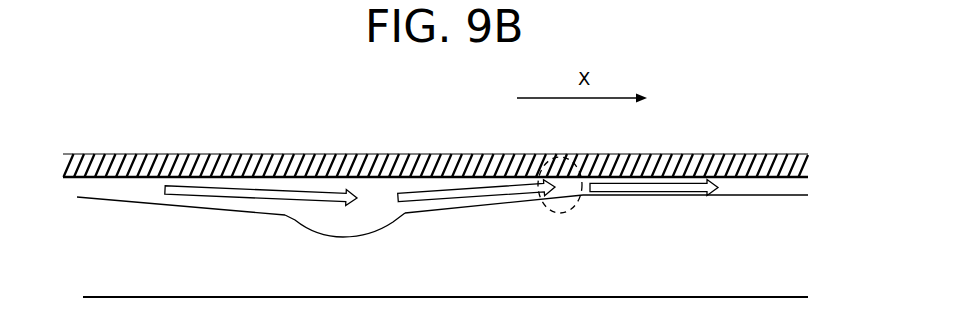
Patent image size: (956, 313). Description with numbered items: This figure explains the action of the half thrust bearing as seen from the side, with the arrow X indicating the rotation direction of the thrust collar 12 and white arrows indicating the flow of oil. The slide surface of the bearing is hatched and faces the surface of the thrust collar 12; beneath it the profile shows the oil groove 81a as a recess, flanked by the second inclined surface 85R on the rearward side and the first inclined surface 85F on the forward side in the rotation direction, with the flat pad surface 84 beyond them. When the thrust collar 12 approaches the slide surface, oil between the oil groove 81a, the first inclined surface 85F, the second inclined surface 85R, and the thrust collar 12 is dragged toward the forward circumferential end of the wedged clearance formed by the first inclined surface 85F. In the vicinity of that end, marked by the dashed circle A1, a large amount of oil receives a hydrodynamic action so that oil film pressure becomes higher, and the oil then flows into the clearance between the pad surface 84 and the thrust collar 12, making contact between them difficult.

The pad surface 84 is at (103, 197).
The second inclined surface 85R is at (267, 212).
The oil groove 81a is at (362, 218).
The first inclined surface 85F is at (438, 208).
The dashed circle A1 is at (576, 161).
The thrust collar 12 is at (750, 177).